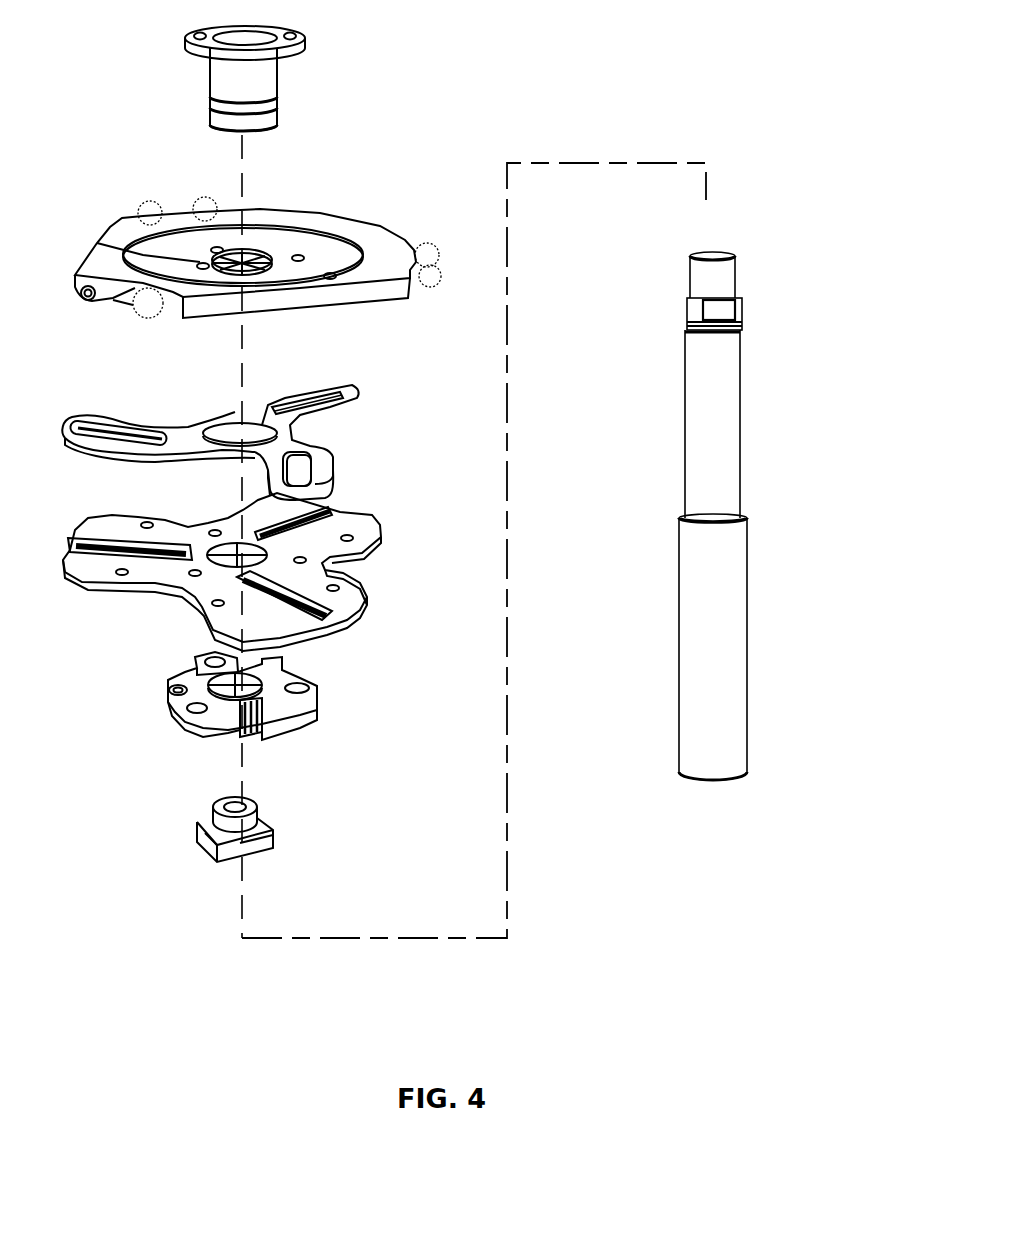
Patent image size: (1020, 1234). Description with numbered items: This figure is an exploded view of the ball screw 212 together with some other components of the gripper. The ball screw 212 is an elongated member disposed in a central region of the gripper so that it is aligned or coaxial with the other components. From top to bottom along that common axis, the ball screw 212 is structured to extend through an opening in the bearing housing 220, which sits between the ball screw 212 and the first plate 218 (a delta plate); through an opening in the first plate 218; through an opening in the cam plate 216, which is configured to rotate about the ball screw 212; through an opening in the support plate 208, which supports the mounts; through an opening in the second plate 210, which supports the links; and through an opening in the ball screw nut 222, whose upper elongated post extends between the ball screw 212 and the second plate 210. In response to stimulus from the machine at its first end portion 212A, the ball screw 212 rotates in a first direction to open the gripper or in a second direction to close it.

The bearing housing 220 is at (158, 78).
The first plate 218 is at (84, 222).
The cam plate 216 is at (90, 395).
The support plate 208 is at (68, 517).
The second plate 210 is at (152, 678).
The ball screw nut 222 is at (172, 812).
The ball screw 212 is at (820, 430).
The first end portion 212A is at (657, 255).